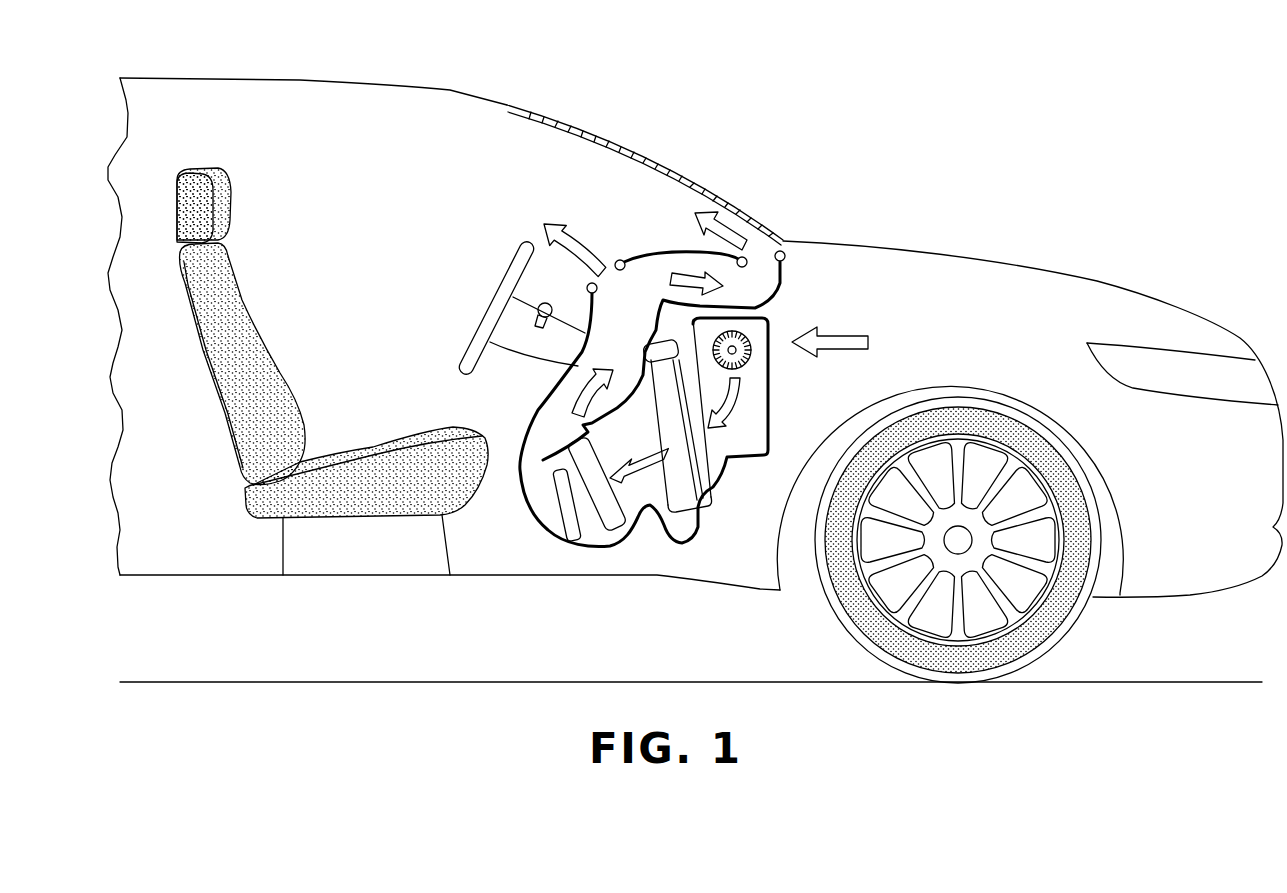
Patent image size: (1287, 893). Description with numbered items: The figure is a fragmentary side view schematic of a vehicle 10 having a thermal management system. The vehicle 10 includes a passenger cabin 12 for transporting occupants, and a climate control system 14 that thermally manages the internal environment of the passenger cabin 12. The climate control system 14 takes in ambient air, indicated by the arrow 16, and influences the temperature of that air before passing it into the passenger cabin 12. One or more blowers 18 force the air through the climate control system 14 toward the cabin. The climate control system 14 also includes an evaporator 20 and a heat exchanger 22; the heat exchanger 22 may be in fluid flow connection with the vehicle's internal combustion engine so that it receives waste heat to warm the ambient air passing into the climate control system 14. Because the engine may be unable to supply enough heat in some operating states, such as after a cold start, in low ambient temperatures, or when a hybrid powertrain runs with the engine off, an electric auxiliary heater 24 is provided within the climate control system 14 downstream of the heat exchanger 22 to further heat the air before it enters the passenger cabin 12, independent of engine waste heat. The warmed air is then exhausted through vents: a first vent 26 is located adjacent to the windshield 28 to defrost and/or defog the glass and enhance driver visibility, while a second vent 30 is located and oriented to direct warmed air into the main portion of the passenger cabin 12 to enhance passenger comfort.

The vehicle 10 is at (818, 75).
The passenger cabin 12 is at (402, 121).
The climate control system 14 is at (772, 345).
The arrow 16 is at (846, 332).
The blower 18 is at (745, 365).
The evaporator 20 is at (684, 494).
The heat exchanger 22 is at (610, 525).
The electric auxiliary heater 24 is at (563, 507).
The first vent 26 is at (748, 260).
The windshield 28 is at (657, 160).
The second vent 30 is at (597, 285).